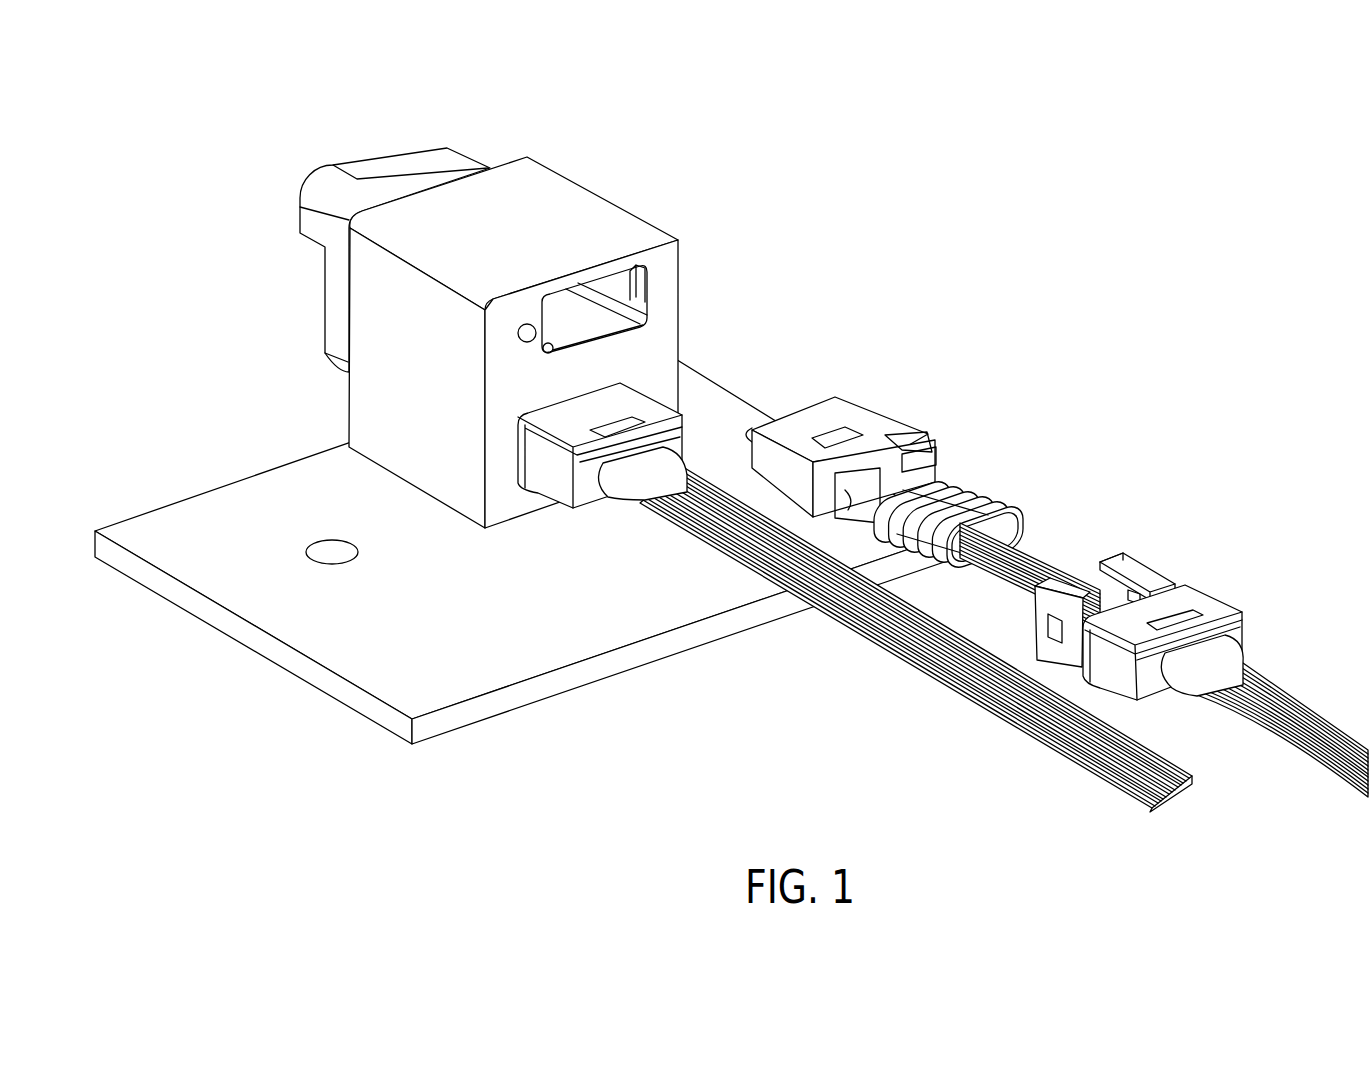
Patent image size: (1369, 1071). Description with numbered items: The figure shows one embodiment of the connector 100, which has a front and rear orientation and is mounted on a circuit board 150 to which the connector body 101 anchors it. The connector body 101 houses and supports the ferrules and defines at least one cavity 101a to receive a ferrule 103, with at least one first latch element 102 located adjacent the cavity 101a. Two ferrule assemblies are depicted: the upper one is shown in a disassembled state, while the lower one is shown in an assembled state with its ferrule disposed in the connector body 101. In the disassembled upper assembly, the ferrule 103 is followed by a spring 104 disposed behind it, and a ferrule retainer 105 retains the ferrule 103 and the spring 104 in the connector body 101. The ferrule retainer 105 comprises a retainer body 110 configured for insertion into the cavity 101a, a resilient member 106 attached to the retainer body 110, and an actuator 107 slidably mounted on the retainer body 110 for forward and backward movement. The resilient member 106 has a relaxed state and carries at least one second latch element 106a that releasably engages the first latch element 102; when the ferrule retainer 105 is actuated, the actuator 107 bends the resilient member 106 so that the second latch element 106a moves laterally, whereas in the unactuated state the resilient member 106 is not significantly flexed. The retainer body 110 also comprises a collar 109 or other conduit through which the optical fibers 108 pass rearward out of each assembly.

The connector 100 is at (381, 137).
The connector body 101 is at (505, 177).
The cavity 101a is at (553, 312).
The first latch element 102 is at (638, 293).
The ferrule 103 is at (842, 412).
The spring 104 is at (967, 487).
The ferrule retainer 105 is at (1155, 572).
The resilient member 106 is at (1070, 650).
The second latch element 106a is at (1047, 633).
The actuator 107 is at (1190, 593).
The optical fibers 108 is at (1277, 730).
The collar 109 is at (1217, 655).
The retainer body 110 is at (1113, 563).
The circuit board 150 is at (305, 637).